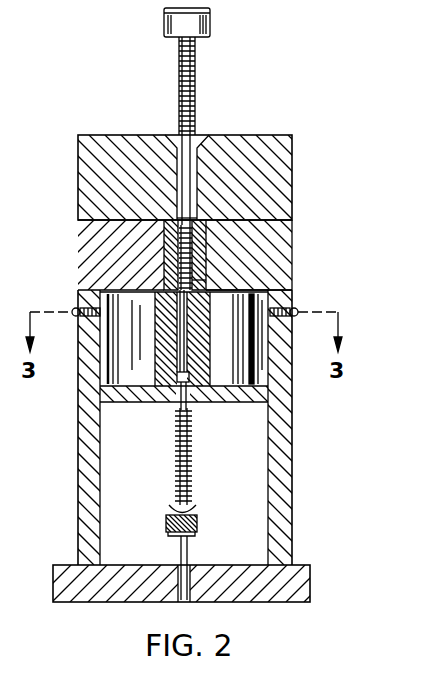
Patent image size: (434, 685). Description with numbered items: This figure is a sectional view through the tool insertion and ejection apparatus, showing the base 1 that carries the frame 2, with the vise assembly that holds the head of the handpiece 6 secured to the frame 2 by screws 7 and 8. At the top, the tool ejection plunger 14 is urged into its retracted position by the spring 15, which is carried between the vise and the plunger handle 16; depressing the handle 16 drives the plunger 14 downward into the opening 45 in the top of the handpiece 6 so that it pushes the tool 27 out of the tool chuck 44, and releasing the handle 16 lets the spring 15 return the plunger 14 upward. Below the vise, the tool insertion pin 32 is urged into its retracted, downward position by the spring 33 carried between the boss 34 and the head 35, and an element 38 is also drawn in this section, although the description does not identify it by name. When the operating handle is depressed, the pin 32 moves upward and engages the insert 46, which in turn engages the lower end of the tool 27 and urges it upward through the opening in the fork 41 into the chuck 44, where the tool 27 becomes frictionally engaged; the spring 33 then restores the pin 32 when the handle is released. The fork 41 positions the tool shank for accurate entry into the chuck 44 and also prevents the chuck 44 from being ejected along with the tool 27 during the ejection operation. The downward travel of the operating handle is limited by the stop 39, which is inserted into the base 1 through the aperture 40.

The base 1 is at (310, 592).
The frame 2 is at (287, 457).
The handpiece 6 is at (166, 228).
The screw 7 is at (74, 310).
The screw 8 is at (298, 310).
The tool ejection plunger 14 is at (248, 137).
The spring 15 is at (197, 81).
The plunger handle 16 is at (208, 11).
The tool 27 is at (222, 288).
The tool insertion pin 32 is at (194, 408).
The spring 33 is at (189, 456).
The boss 34 is at (180, 416).
The head 35 is at (192, 510).
The bushing 38 is at (203, 220).
The stop 39 is at (188, 551).
The aperture 40 is at (193, 600).
The tool shank positioning and chuck holding fork 41 is at (200, 280).
The tool chuck 44 is at (184, 247).
The opening 45 is at (193, 217).
The insert 46 is at (189, 377).